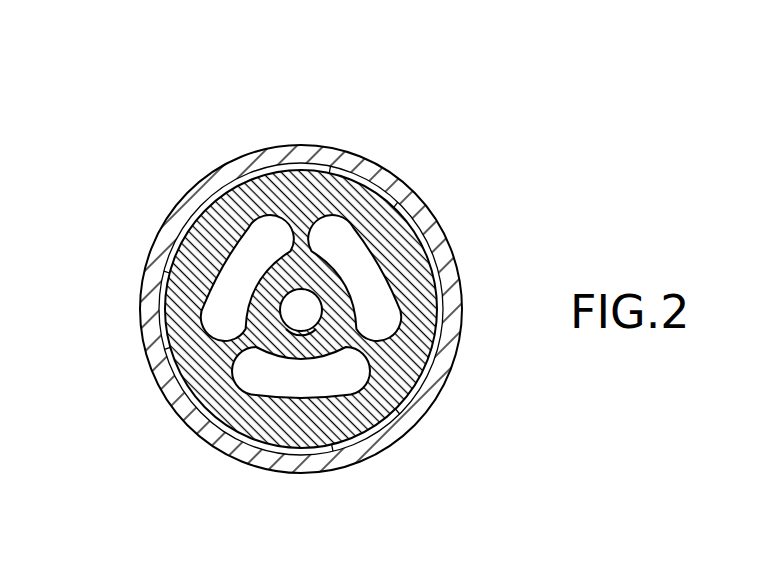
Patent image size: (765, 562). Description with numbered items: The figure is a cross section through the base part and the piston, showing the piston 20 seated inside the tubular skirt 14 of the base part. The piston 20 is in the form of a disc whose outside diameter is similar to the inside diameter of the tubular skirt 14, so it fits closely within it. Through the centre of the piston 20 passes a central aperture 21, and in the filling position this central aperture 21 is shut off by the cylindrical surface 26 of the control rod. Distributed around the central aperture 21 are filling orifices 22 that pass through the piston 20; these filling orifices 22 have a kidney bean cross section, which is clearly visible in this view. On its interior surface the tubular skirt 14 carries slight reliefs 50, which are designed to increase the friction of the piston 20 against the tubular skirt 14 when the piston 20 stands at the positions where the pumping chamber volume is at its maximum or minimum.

The tubular skirt 14 is at (228, 172).
The slight reliefs 50 is at (160, 313).
The piston 20 is at (222, 387).
The central aperture 21 is at (303, 300).
The filling orifices 22 is at (337, 272).
The cylindrical surface 26 is at (280, 312).